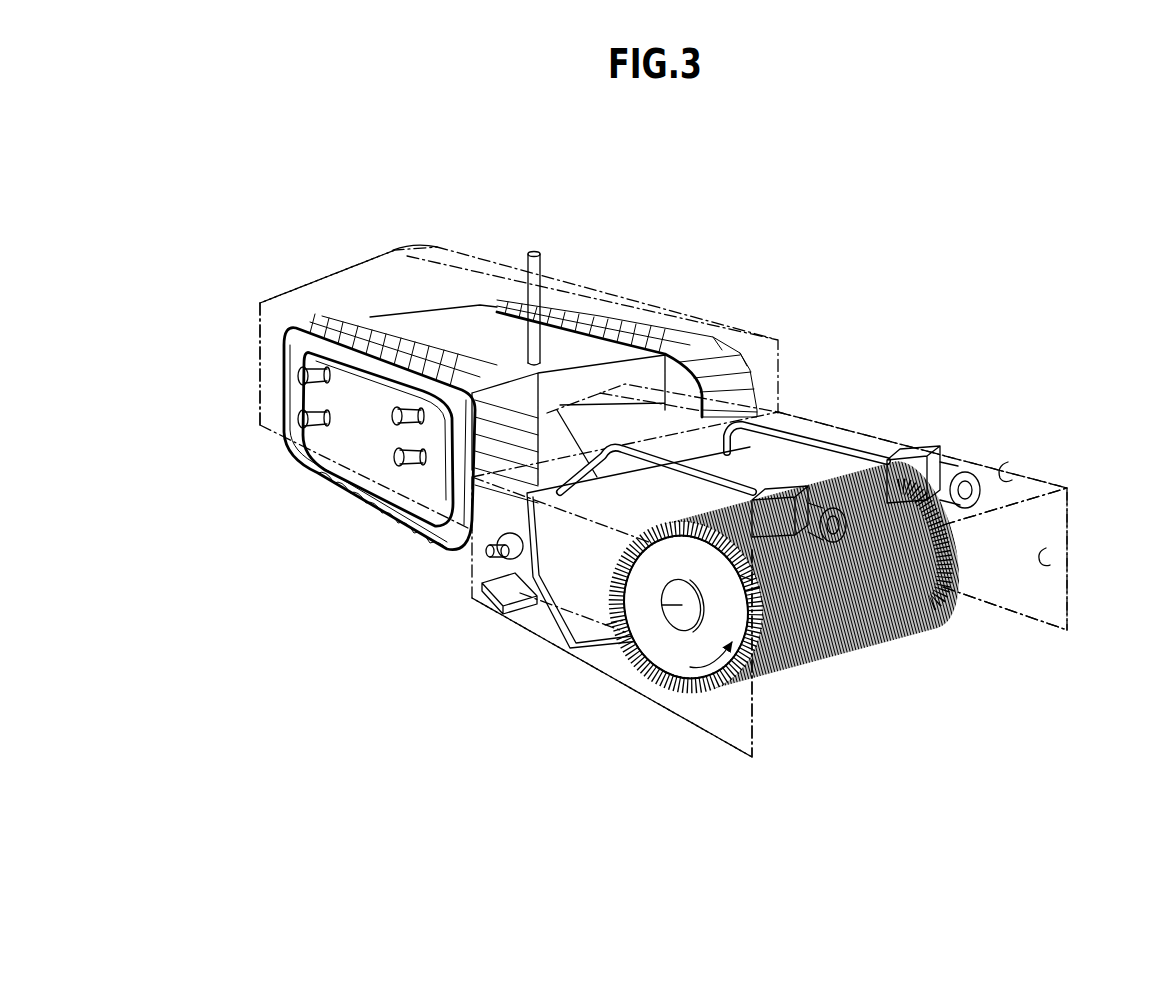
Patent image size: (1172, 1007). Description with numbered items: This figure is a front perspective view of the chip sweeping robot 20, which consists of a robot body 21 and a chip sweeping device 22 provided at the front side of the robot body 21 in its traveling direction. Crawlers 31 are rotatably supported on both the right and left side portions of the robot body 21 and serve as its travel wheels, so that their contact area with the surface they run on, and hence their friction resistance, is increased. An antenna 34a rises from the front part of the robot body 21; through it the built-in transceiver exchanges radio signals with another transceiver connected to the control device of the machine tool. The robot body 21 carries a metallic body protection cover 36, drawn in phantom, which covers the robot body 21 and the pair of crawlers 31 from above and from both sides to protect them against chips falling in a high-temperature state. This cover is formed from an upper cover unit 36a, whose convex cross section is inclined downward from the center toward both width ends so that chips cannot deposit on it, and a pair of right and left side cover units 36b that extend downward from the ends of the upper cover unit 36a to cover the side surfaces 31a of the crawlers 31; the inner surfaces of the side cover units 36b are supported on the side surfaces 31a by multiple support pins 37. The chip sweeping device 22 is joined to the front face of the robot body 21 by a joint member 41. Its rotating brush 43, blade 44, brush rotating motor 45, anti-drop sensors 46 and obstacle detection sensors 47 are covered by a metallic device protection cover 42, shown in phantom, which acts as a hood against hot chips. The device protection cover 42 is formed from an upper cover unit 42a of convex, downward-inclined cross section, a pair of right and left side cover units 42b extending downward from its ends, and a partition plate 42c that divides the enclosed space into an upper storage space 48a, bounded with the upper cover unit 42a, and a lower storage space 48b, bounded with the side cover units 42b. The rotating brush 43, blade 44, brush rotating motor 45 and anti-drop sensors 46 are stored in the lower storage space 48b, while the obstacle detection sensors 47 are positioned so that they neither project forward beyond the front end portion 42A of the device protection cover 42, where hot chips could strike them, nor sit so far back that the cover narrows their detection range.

The chip sweeping robot 20 is at (850, 253).
The robot body 21 is at (450, 318).
The chip sweeping device 22 is at (851, 720).
The crawlers 31 is at (742, 400).
The side surfaces of the crawlers 31a is at (423, 492).
The antenna 34a is at (538, 292).
The body protection cover 36 is at (343, 262).
The upper cover unit 36a is at (305, 282).
The side cover units 36b is at (258, 352).
The support pins 37 is at (305, 424).
The joint member 41 is at (630, 420).
The device protection cover 42 is at (843, 420).
The upper cover unit 42a is at (880, 432).
The front end portion of the device protection cover 42A is at (758, 738).
The side cover units 42b is at (1075, 610).
The partition plate 42c is at (977, 522).
The rotating brush 43 is at (667, 648).
The blade 44 is at (560, 606).
The brush rotating motor 45 is at (512, 560).
The anti-drop sensors 46 is at (494, 598).
The obstacle detection sensors 47 is at (962, 465).
The upper storage space 48a is at (1010, 468).
The lower storage space 48b is at (1048, 552).